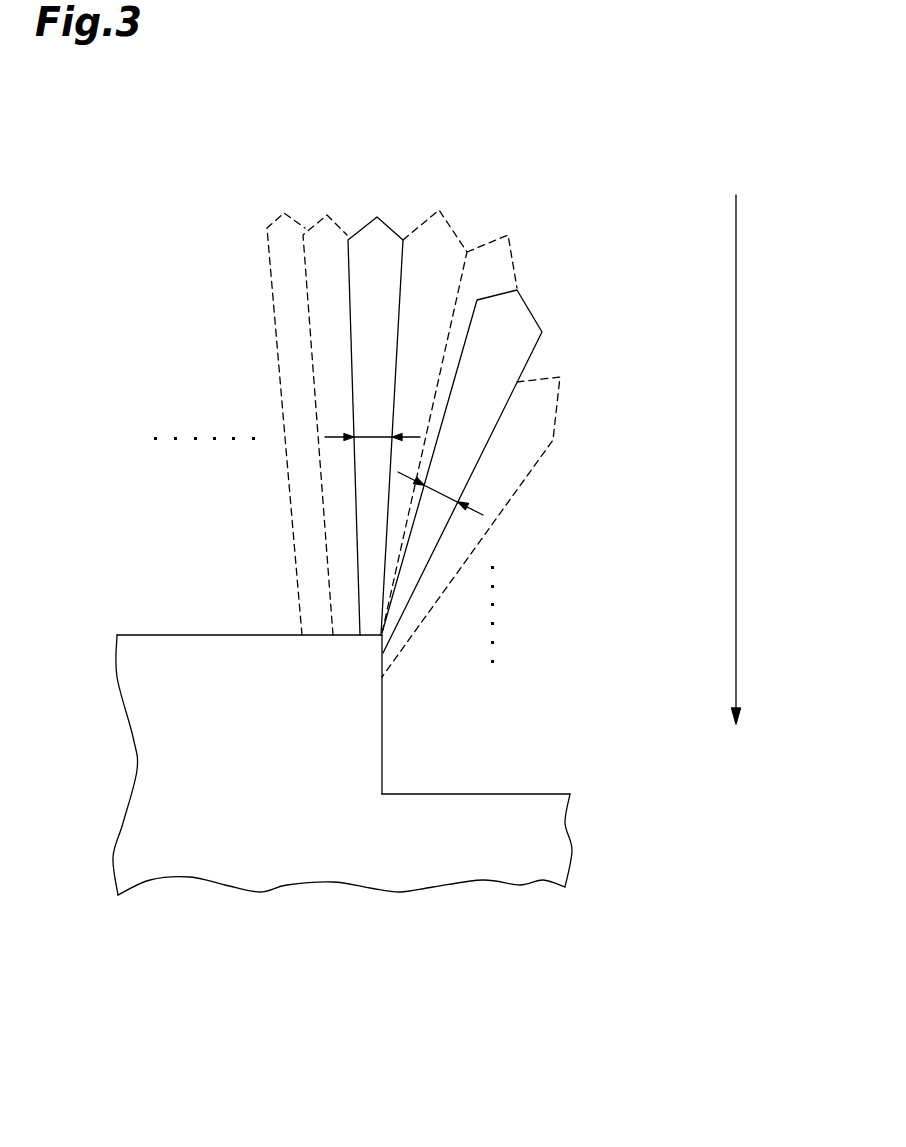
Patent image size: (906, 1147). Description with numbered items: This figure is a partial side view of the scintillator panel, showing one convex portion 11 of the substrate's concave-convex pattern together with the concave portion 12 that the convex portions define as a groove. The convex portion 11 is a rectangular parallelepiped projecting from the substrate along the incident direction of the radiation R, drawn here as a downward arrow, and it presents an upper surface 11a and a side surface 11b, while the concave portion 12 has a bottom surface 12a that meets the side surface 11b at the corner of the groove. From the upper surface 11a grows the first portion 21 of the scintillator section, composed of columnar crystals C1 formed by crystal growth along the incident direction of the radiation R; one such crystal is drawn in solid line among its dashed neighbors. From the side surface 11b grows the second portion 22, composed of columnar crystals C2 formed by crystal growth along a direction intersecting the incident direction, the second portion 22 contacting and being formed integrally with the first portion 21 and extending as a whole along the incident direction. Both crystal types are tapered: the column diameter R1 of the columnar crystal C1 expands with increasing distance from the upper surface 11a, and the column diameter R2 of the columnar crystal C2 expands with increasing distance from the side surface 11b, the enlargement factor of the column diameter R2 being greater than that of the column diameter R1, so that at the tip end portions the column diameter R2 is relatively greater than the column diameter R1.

The convex portion 11 is at (250, 721).
The upper surface of the convex portion 11a is at (147, 635).
The side surface of the convex portion 11b is at (385, 753).
The bottom surface of the concave portion 12a is at (500, 793).
The concave portion 12 is at (490, 868).
The first portion 21 is at (320, 165).
The columnar crystal C1 is at (360, 225).
The second portion 22 is at (543, 227).
The columnar crystal C2 is at (527, 299).
The column diameter R1 is at (375, 435).
The column diameter R2 is at (442, 490).
The radiation R is at (736, 462).